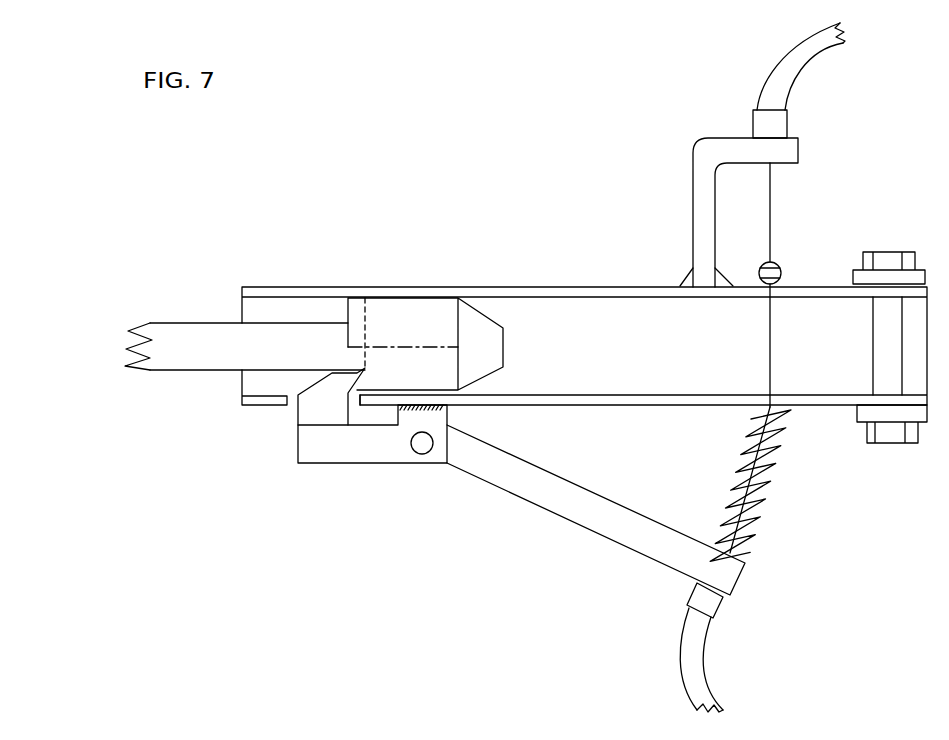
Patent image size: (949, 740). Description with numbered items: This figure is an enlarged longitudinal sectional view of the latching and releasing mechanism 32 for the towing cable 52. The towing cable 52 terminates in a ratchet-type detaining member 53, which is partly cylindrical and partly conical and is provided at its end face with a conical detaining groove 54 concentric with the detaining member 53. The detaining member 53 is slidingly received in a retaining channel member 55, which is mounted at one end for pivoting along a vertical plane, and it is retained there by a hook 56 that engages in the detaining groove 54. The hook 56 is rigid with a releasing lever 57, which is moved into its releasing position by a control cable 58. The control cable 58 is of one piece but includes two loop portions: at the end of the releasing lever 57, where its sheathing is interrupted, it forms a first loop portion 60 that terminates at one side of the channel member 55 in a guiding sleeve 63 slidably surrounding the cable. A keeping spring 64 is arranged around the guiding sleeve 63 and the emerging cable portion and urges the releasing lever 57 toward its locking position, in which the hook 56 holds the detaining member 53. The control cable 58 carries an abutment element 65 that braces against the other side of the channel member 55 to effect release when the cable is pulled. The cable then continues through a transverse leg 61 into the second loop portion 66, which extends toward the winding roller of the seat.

The latching and releasing mechanism 32 is at (584, 344).
The towing cable 52 is at (167, 355).
The ratchet-type detaining member 53 is at (422, 293).
The detaining groove 54 is at (367, 300).
The retaining channel member 55 is at (560, 405).
The hook 56 is at (320, 446).
The releasing lever 57 is at (617, 534).
The control cable 58 is at (775, 207).
The first loop portion 60 is at (746, 672).
The transverse leg 61 is at (712, 200).
The guiding sleeve 63 is at (760, 450).
The keeping spring 64 is at (824, 484).
The abutment element 65 is at (782, 266).
The second loop portion 66 is at (832, 71).